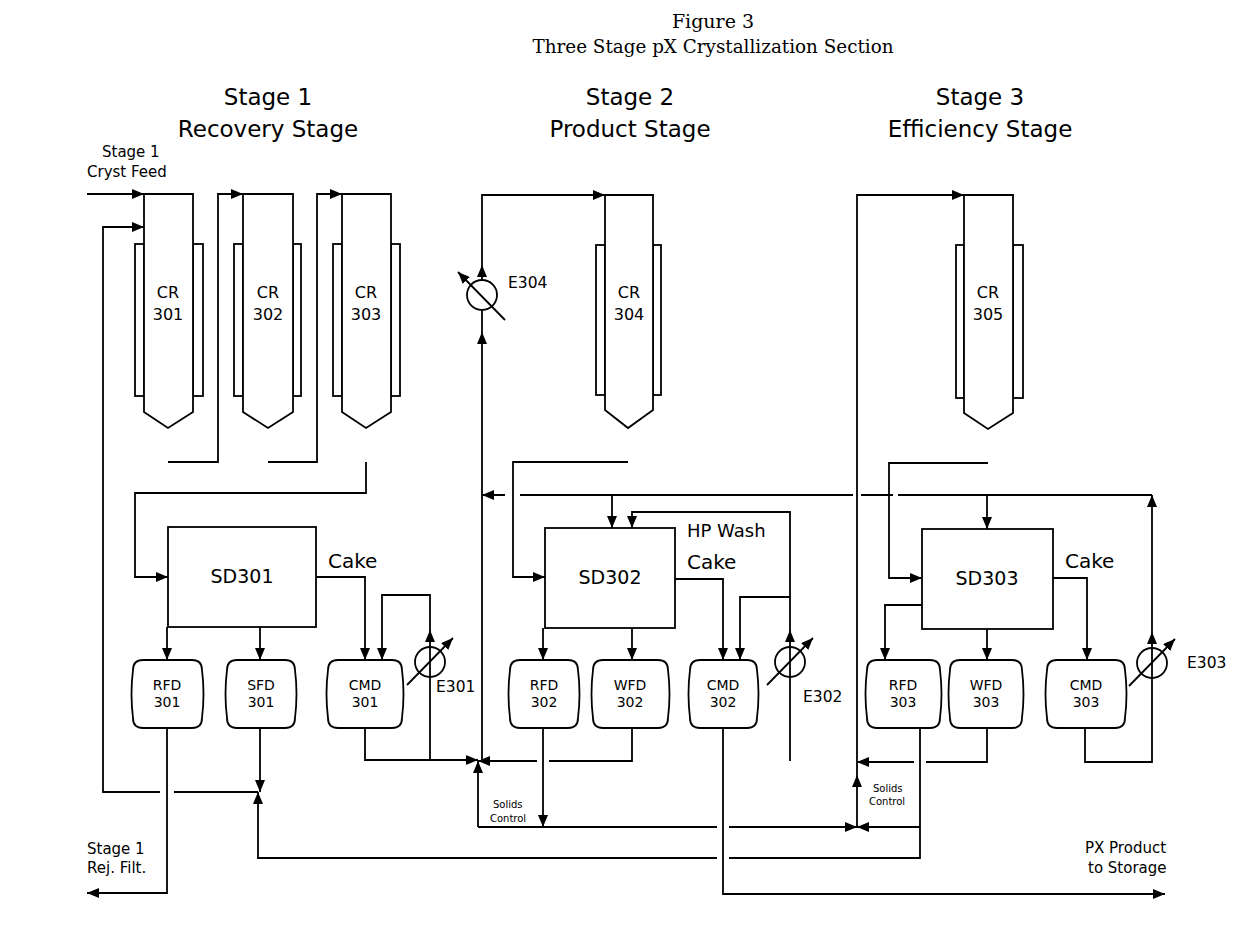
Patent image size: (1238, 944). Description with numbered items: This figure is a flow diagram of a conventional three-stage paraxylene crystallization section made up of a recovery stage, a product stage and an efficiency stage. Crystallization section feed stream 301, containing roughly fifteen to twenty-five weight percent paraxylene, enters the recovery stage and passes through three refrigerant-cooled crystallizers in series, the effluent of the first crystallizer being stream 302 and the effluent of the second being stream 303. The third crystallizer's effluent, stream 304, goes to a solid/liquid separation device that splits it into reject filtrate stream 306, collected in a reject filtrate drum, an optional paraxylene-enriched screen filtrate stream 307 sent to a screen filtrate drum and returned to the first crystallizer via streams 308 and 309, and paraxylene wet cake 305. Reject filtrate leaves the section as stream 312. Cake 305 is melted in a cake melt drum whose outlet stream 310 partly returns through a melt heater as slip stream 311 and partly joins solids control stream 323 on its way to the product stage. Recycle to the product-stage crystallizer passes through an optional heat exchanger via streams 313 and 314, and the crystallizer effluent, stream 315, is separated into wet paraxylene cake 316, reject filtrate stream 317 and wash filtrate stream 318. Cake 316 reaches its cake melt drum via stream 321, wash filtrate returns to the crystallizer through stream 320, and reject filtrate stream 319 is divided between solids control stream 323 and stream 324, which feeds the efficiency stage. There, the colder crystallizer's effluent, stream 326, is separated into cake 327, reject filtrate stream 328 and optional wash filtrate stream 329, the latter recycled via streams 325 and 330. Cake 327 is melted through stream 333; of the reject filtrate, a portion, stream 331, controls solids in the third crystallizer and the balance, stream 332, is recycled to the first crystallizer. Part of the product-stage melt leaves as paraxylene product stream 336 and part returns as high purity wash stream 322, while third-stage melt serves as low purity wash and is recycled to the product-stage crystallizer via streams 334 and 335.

The crystallization section feed stream 301 is at (115, 194).
The first crystallizer effluent stream 302 is at (205, 332).
The second crystallizer effluent stream 303 is at (305, 332).
The third crystallizer effluent stream 304 is at (250, 519).
The paraxylene wet cake 305 is at (348, 618).
The reject filtrate stream 306 is at (167, 643).
The screen filtrate stream 307 is at (260, 643).
The screen filtrate recycle stream 308 is at (260, 760).
The recycle stream to first crystallizer 309 is at (173, 509).
The cake melt drum outlet stream 310 is at (414, 744).
The melt heater slip stream 311 is at (413, 677).
The reject filtrate stream 312 is at (127, 814).
The wash filtrate recycle stream 313 is at (481, 536).
The recycle stream to product-stage crystallizer 314 is at (536, 237).
The product-stage crystallizer effluent stream 315 is at (570, 515).
The wet paraxylene cake 316 is at (699, 615).
The reject filtrate stream 317 is at (543, 644).
The wash filtrate stream 318 is at (632, 644).
The second-stage reject filtrate stream 319 is at (543, 777).
The wash filtrate recycle stream 320 is at (562, 744).
The cake transfer stream 321 is at (790, 679).
The high purity cake wash stream 322 is at (711, 582).
The solids control stream 323 is at (478, 794).
The second-stage reject filtrate stream to third stage 324 is at (667, 827).
The wash filtrate recycle stream 325 is at (903, 511).
The efficiency-stage crystallizer effluent stream 326 is at (938, 516).
The third-stage cake 327 is at (1070, 616).
The reject filtrate stream 328 is at (903, 628).
The wash filtrate stream 329 is at (987, 644).
The wash filtrate recycle stream 330 is at (929, 745).
The third-stage solids control stream 331 is at (888, 827).
The third-stage filtrate recycle stream 332 is at (589, 797).
The cake melt circulation stream 333 is at (1118, 632).
The third-stage melt recycle stream 334 is at (1025, 508).
The melt recycle stream to product-stage crystallizer 335 is at (687, 507).
The paraxylene product stream 336 is at (936, 811).